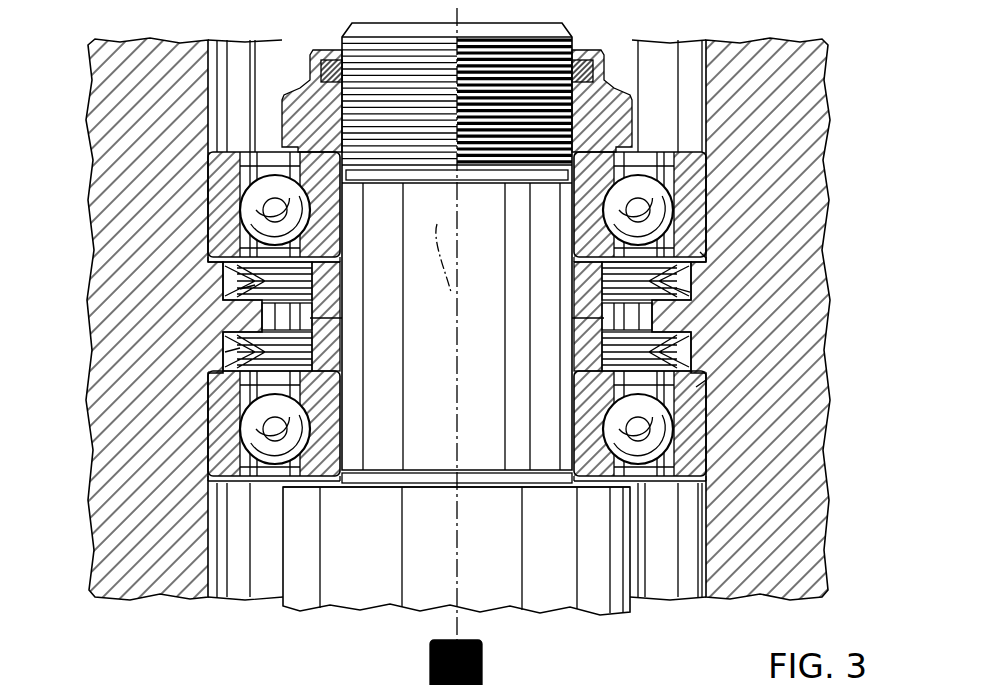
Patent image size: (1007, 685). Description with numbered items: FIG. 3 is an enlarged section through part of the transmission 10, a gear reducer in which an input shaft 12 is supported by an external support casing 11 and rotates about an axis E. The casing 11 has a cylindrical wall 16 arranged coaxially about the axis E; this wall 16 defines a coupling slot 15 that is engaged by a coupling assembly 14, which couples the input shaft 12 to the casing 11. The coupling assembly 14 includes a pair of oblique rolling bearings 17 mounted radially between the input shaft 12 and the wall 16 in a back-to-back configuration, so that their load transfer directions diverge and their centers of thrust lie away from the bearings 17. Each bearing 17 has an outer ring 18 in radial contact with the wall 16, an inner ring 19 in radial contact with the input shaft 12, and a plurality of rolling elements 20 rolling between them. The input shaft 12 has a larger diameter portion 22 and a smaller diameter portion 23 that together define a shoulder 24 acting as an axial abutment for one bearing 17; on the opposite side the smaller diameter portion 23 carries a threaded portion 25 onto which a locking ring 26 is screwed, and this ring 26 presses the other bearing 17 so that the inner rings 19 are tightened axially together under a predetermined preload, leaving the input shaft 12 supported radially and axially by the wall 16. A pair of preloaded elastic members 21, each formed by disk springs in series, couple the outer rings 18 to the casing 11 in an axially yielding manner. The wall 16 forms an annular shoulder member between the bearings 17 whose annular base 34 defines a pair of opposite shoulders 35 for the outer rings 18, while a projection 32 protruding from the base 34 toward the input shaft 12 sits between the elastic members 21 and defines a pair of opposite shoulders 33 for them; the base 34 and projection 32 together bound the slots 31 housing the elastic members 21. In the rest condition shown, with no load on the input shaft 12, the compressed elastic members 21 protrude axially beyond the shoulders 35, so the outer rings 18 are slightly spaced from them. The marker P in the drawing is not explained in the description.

The transmission 10 is at (160, 625).
The external support casing 11 is at (718, 133).
The input shaft 12 is at (545, 546).
The coupling assembly 14 is at (668, 500).
The coupling slot 15 is at (684, 145).
The cylindrical wall 16 is at (133, 133).
The oblique rolling bearings 17 is at (265, 135).
The outer rings 18 is at (217, 213).
The inner rings 19 is at (325, 277).
The rolling elements 20 is at (275, 210).
The preloaded elastic members 21 is at (225, 303).
The larger diameter portion 22 is at (413, 517).
The smaller diameter portion 23 is at (517, 197).
The shoulder 24 is at (319, 479).
The threaded portion 25 is at (566, 42).
The locking ring 26 is at (298, 97).
The slots 31 is at (340, 318).
The projection 32 is at (600, 322).
The shoulders 33 is at (227, 350).
The annular base 34 is at (240, 289).
The shoulders 35 is at (700, 252).
The axis E is at (433, 247).
The position marker P is at (485, 665).